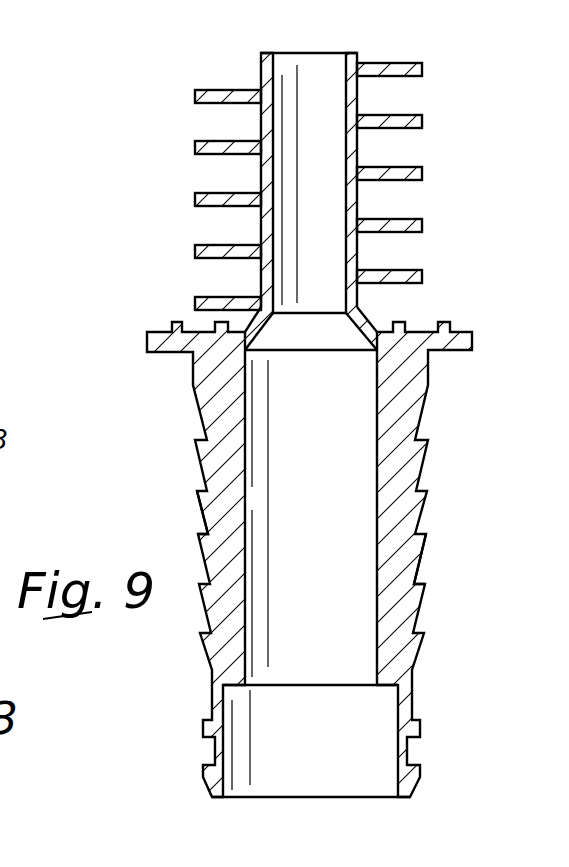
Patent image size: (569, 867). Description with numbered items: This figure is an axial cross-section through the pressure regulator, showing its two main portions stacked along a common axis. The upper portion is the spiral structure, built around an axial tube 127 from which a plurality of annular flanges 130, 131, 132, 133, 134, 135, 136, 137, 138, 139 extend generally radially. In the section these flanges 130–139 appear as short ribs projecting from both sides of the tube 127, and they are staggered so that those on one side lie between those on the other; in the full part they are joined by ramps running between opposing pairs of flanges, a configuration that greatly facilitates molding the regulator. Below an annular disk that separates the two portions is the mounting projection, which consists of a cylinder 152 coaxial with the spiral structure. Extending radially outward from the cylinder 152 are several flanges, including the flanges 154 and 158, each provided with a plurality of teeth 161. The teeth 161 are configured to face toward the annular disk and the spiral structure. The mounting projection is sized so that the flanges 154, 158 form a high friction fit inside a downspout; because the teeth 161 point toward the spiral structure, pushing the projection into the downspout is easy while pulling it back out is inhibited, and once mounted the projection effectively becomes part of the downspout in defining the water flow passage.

The axial tube 127 is at (262, 57).
The annular flange 130 is at (421, 63).
The annular flange 131 is at (195, 91).
The annular flange 132 is at (422, 120).
The annular flange 133 is at (197, 142).
The annular flange 134 is at (422, 171).
The annular flange 135 is at (197, 197).
The annular flange 136 is at (422, 224).
The annular flange 137 is at (197, 250).
The annular flange 138 is at (422, 274).
The annular flange 139 is at (197, 303).
The cylinder 152 is at (224, 389).
The flange 154 is at (213, 506).
The flange 158 is at (400, 426).
The teeth 161 is at (413, 538).